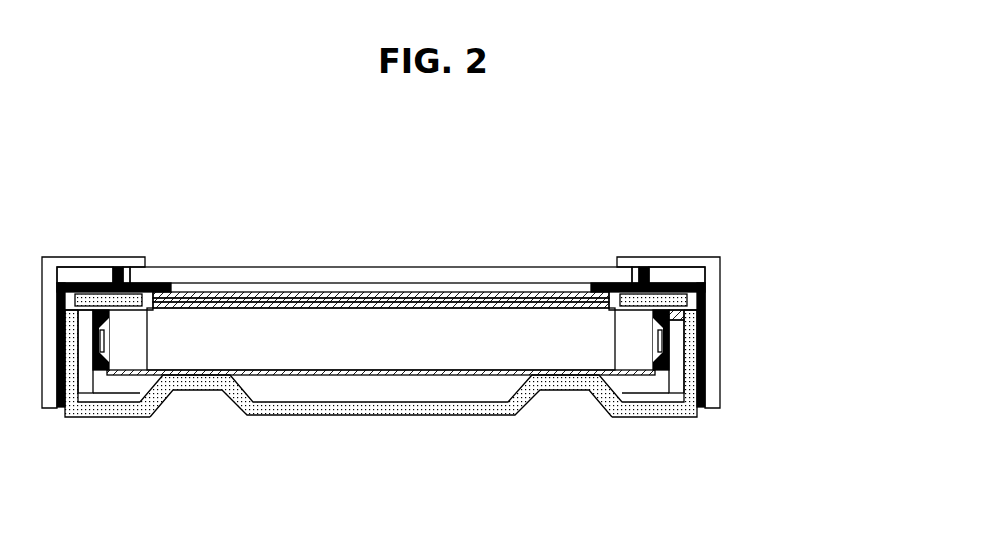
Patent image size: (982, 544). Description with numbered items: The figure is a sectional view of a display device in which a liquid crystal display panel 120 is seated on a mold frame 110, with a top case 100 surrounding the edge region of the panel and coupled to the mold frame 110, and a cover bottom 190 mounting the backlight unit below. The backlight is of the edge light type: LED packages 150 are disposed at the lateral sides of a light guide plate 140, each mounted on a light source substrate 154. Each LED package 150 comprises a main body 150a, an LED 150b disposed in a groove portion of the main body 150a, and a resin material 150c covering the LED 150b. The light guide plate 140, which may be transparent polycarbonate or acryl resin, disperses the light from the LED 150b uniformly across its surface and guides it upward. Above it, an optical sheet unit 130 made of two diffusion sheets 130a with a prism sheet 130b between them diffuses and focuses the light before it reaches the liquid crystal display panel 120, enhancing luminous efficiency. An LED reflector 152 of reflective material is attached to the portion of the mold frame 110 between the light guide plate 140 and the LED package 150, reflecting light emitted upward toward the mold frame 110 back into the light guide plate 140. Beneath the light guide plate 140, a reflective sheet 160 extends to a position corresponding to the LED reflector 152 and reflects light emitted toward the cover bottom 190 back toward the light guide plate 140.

The top case 100 is at (115, 262).
The mold frame 110 is at (82, 281).
The liquid crystal display panel 120 is at (571, 277).
The optical sheet unit 130 is at (381, 227).
The diffusion sheet 130a is at (248, 294).
The prism sheet 130b is at (305, 300).
The light guide plate 140 is at (196, 356).
The LED package 150 is at (750, 343).
The main body 150a is at (684, 315).
The LED 150b is at (665, 345).
The resin material 150c is at (670, 372).
The LED reflector 152 is at (689, 298).
The light source substrate 154 is at (677, 388).
The reflective sheet 160 is at (362, 375).
The cover bottom 190 is at (112, 412).